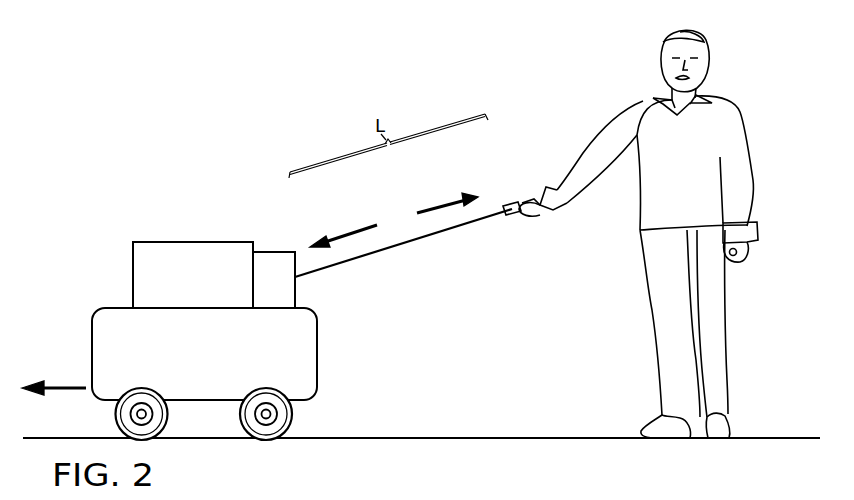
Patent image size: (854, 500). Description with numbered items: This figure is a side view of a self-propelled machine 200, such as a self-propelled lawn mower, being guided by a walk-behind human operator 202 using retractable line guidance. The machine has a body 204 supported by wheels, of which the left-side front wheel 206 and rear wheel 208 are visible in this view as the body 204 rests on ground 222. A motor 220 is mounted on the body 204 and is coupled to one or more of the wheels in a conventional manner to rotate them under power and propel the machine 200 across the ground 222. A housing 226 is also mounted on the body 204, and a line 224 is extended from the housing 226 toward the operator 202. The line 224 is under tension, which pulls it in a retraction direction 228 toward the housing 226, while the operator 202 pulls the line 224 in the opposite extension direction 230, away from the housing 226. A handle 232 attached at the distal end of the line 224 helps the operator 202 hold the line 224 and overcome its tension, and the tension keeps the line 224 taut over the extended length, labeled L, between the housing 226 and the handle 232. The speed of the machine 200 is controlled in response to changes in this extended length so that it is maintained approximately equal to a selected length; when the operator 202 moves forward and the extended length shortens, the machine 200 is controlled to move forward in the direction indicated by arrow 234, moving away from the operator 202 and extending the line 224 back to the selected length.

The self-propelled machine 200 is at (121, 186).
The operator 202 is at (742, 130).
The body 204 is at (317, 368).
The front wheel 206 is at (141, 388).
The rear wheel 208 is at (269, 388).
The motor 220 is at (188, 241).
The ground 222 is at (784, 437).
The line 224 is at (402, 253).
The housing 226 is at (278, 251).
The retraction direction 228 is at (352, 230).
The extension direction 230 is at (437, 205).
The handle 232 is at (513, 202).
The arrow 234 is at (53, 385).